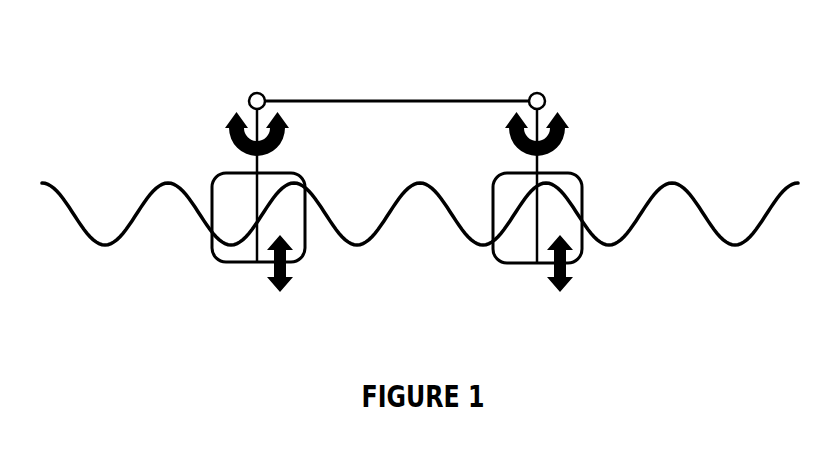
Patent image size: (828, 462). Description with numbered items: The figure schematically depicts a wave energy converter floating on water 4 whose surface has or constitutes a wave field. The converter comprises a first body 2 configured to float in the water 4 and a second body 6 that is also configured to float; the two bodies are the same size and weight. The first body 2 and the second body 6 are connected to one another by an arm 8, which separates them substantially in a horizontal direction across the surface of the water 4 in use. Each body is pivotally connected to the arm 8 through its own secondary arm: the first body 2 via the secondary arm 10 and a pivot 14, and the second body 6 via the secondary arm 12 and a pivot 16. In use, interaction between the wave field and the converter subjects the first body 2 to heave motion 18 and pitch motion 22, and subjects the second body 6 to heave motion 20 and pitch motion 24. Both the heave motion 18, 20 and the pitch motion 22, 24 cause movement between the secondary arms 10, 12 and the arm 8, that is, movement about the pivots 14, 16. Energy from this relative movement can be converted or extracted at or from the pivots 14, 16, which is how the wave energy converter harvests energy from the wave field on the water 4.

The first body 2 is at (222, 253).
The water 4 is at (698, 228).
The second body 6 is at (510, 253).
The arm 8 is at (373, 93).
The secondary arm 10 is at (252, 164).
The secondary arm 12 is at (542, 167).
The pivot 14 is at (248, 93).
The pivot 16 is at (547, 93).
The heave motion 18 is at (298, 272).
The heave motion 20 is at (577, 277).
The pitch motion 22 is at (295, 132).
The pitch motion 24 is at (507, 138).